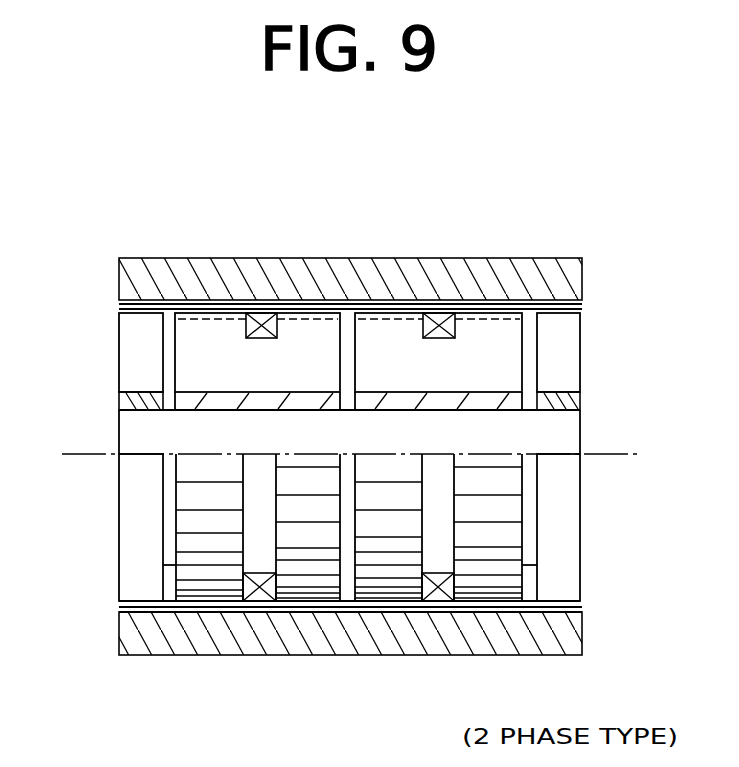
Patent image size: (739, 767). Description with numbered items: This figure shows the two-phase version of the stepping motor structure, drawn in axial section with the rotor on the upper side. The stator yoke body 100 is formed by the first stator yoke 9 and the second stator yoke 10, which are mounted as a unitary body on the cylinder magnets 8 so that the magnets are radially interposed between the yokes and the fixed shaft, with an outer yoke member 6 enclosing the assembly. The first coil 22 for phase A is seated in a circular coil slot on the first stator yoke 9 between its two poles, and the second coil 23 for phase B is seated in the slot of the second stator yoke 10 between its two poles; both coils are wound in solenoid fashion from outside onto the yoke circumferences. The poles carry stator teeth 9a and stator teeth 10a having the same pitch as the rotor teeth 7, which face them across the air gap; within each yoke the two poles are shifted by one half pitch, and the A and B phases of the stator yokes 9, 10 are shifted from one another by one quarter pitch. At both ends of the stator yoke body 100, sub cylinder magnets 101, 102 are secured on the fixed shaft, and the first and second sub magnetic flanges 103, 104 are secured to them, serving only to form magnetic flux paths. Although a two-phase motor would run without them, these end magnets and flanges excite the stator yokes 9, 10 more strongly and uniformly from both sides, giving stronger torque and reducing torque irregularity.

The stator yoke body 100 is at (527, 191).
The outer yoke 6 is at (350, 259).
The rotor teeth 7 is at (264, 304).
The cylinder magnets 8 is at (349, 432).
The first stator yoke 9 is at (169, 572).
The stator teeth 9a is at (210, 553).
The second stator yoke 10 is at (530, 577).
The stator teeth 10a is at (393, 553).
The first coil 22 is at (258, 313).
The second coil 23 is at (435, 313).
The sub cylinder magnet 101 is at (125, 401).
The sub cylinder magnet 102 is at (578, 405).
The first sub magnetic flange 103 is at (132, 360).
The second sub magnetic flange 104 is at (570, 382).